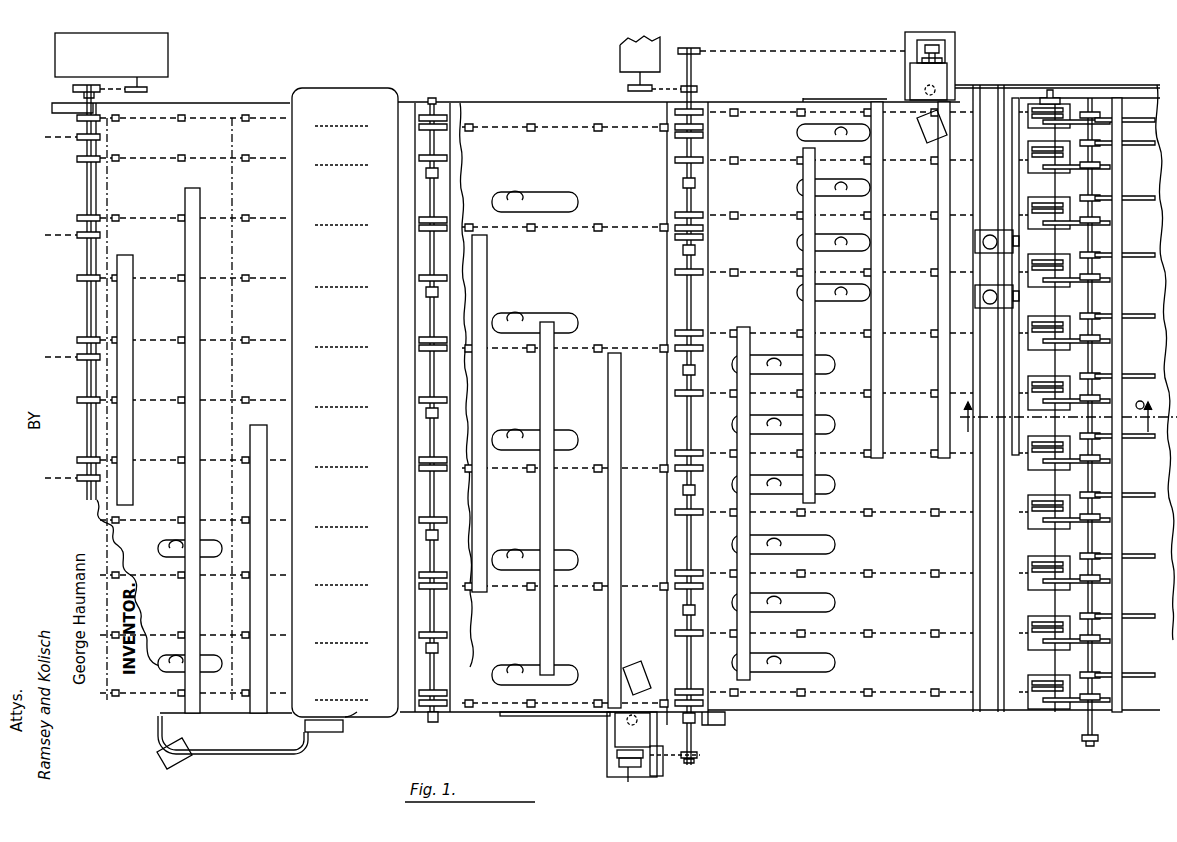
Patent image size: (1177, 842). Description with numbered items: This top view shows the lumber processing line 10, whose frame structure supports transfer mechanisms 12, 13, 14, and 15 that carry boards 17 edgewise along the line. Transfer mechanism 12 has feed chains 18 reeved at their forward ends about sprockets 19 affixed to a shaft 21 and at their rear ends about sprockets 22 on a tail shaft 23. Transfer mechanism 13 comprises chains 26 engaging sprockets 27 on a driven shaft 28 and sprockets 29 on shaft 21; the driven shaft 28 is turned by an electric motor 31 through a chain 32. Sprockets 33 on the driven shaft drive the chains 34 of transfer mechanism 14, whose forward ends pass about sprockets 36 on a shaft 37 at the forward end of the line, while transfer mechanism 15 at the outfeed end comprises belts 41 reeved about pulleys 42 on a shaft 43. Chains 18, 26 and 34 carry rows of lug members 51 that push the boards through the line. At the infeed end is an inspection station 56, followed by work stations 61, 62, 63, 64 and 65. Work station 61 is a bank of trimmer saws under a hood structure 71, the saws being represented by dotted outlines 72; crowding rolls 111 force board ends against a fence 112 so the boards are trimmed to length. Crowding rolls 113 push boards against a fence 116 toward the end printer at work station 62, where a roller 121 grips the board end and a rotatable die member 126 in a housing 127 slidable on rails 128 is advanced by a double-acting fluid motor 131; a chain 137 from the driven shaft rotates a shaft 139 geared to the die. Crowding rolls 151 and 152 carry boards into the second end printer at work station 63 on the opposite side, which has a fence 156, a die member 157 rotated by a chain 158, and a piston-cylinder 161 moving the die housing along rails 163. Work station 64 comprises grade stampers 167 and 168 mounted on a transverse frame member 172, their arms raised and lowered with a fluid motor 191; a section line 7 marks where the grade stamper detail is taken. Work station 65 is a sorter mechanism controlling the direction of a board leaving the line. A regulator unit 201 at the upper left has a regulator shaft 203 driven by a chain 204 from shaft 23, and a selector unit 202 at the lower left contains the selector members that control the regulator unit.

The processing line 10 is at (218, 98).
The transfer mechanism 12 is at (246, 115).
The transfer mechanism 13 is at (533, 110).
The transfer mechanism 14 is at (786, 83).
The transfer mechanism 15 is at (1132, 117).
The boards 17 is at (185, 380).
The feed chains 18 is at (278, 160).
The sprockets 19 is at (418, 203).
The shaft 21 is at (432, 96).
The sprockets 22 is at (80, 210).
The tail shaft 23 is at (78, 96).
The chains 26 is at (546, 129).
The sprockets 27 is at (664, 215).
The driven shaft 28 is at (690, 48).
The sprockets 29 is at (448, 128).
The electric motor 31 is at (622, 54).
The chain 32 is at (669, 88).
The sprockets 33 is at (701, 207).
The chains 34 is at (778, 175).
The sprockets 36 is at (1035, 148).
The shaft 37 is at (1048, 90).
The belts 41 is at (1145, 255).
The pulleys 42 is at (1098, 158).
The shaft 43 is at (1101, 221).
The lug members 51 is at (118, 220).
The inspection station 56 is at (233, 188).
The work station 61 is at (355, 730).
The work station 62 is at (600, 781).
The work station 63 is at (958, 52).
The work station 64 is at (987, 197).
The work station 65 is at (1080, 97).
The hood structure 71 is at (383, 718).
The saws 72 is at (343, 230).
The crowding rolls 111 is at (214, 547).
The fence 112 is at (223, 717).
The crowding rolls 113 is at (571, 205).
The fence 116 is at (560, 716).
The roller 121 is at (635, 683).
The die member 126 is at (616, 729).
The housing 127 is at (617, 755).
The rails 128 is at (617, 759).
The double-acting fluid motor 131 is at (629, 782).
The chain 137 is at (678, 762).
The shaft 139 is at (634, 750).
The crowding rolls 151 is at (833, 377).
The crowding rolls 152 is at (880, 188).
The fence 156 is at (867, 99).
The die member 157 is at (922, 90).
The chain 158 is at (788, 58).
The double-acting piston-cylinder 161 is at (942, 44).
The rails 163 is at (912, 49).
The grade stamper 167 is at (973, 242).
The grade stamper 168 is at (973, 297).
The transverse frame member 172 is at (998, 546).
The double-acting fluid motor 191 is at (1140, 401).
The regulator unit 201 is at (181, 35).
The selector unit 202 is at (175, 762).
The regulator shaft 203 is at (150, 78).
The chain 204 is at (113, 86).
The section line 7 is at (1063, 410).